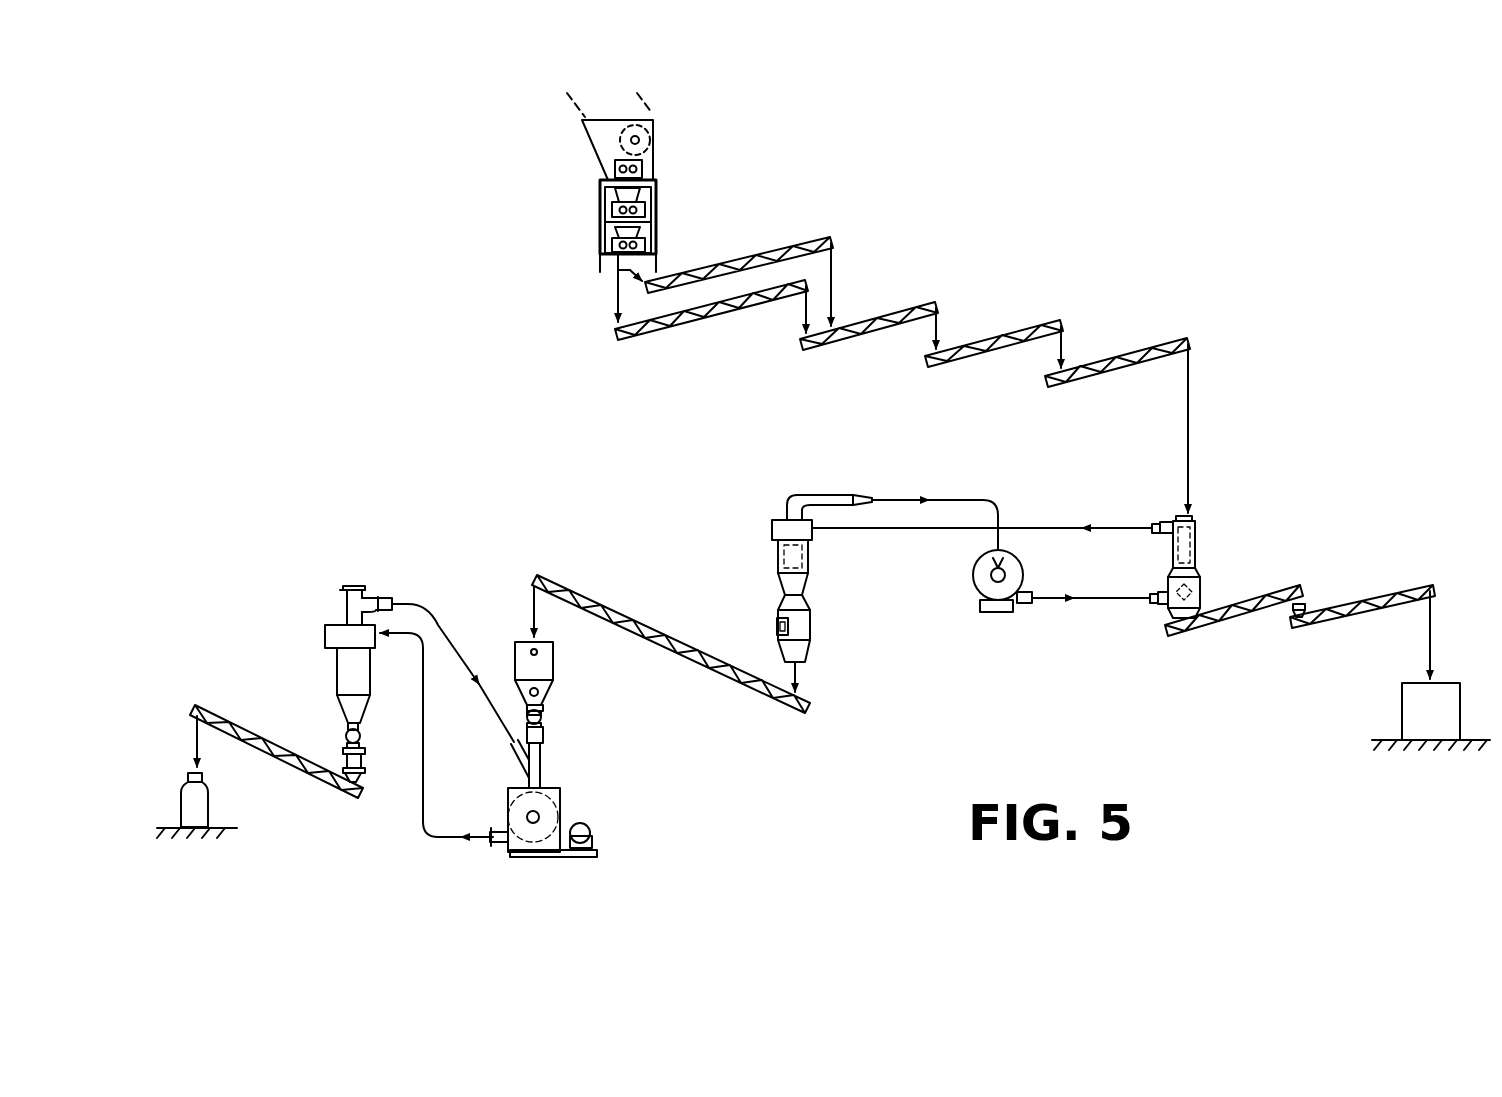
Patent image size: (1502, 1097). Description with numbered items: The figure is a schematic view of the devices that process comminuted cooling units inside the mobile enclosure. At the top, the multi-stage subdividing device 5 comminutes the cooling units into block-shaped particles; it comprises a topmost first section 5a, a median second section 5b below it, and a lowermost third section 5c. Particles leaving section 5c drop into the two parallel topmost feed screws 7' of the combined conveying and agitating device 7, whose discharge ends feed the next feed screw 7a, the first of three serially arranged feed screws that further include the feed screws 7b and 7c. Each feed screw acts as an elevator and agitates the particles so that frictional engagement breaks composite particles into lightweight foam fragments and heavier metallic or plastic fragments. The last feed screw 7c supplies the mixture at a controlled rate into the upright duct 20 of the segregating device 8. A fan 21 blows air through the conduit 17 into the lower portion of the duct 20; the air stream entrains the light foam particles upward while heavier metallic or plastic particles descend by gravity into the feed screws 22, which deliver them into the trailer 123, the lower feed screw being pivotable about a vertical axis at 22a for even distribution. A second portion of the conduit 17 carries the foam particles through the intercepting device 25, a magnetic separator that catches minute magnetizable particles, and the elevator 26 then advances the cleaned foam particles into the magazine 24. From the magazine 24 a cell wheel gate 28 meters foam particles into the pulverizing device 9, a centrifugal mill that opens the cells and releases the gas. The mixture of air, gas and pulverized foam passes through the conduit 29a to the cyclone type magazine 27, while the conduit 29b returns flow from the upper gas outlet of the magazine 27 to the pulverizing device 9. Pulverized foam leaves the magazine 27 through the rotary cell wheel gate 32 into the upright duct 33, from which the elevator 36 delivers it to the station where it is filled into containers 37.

The subdividing device 5 is at (622, 207).
The first section 5a is at (645, 176).
The second section 5b is at (610, 207).
The third section 5c is at (610, 243).
The combined conveying and agitating device 7 is at (902, 320).
The topmost feed screws 7' is at (724, 277).
The feed screw 7a is at (873, 318).
The feed screw 7b is at (988, 338).
The feed screw 7c is at (1112, 357).
The segregating device 8 is at (1186, 530).
The pulverizing device 9 is at (548, 808).
The conduit 17 is at (1052, 527).
The duct 20 is at (1195, 560).
The fan 21 is at (978, 580).
The feed screws 22 is at (1290, 597).
The vertical pivot axis 22a is at (1284, 610).
The magazine 24 is at (556, 665).
The intercepting device 25 is at (804, 625).
The elevator 26 is at (658, 635).
The cyclone type magazine 27 is at (343, 677).
The gate 28 is at (545, 716).
The conduit 29a is at (423, 830).
The conduit 29b is at (447, 630).
The rotary cell wheel gate 32 is at (350, 734).
The upright duct 33 is at (363, 763).
The elevator 36 is at (328, 782).
The containers 37 is at (185, 817).
The trailer 123 is at (1413, 712).